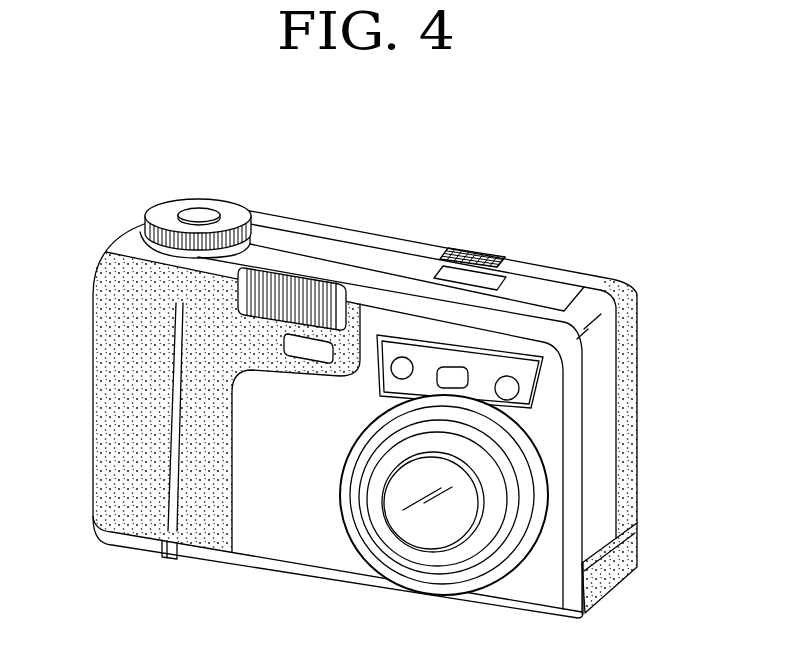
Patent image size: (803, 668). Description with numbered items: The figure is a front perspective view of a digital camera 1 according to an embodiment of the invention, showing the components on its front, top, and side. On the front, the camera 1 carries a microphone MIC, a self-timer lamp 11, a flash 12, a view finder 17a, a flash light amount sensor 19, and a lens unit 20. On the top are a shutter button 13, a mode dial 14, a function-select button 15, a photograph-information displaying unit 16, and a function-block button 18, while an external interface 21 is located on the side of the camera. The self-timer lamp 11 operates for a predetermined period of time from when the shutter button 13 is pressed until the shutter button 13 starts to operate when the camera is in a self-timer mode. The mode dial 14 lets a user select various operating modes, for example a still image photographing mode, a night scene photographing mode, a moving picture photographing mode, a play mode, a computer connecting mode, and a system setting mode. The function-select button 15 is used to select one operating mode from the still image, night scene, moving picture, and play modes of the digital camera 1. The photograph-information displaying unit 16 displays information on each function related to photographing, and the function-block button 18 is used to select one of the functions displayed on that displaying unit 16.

The digital camera 1 is at (593, 168).
The self-timer lamp 11 is at (402, 357).
The flash 12 is at (287, 290).
The shutter button 13 is at (199, 208).
The mode dial 14 is at (165, 217).
The function-select button 15 is at (467, 250).
The photograph-information displaying unit 16 is at (473, 277).
The view finder 17a is at (463, 373).
The function-block button 18 is at (503, 260).
The flash light amount sensor 19 is at (518, 390).
The lens unit 20 is at (458, 505).
The external interface 21 is at (627, 553).
The microphone MIC is at (318, 346).